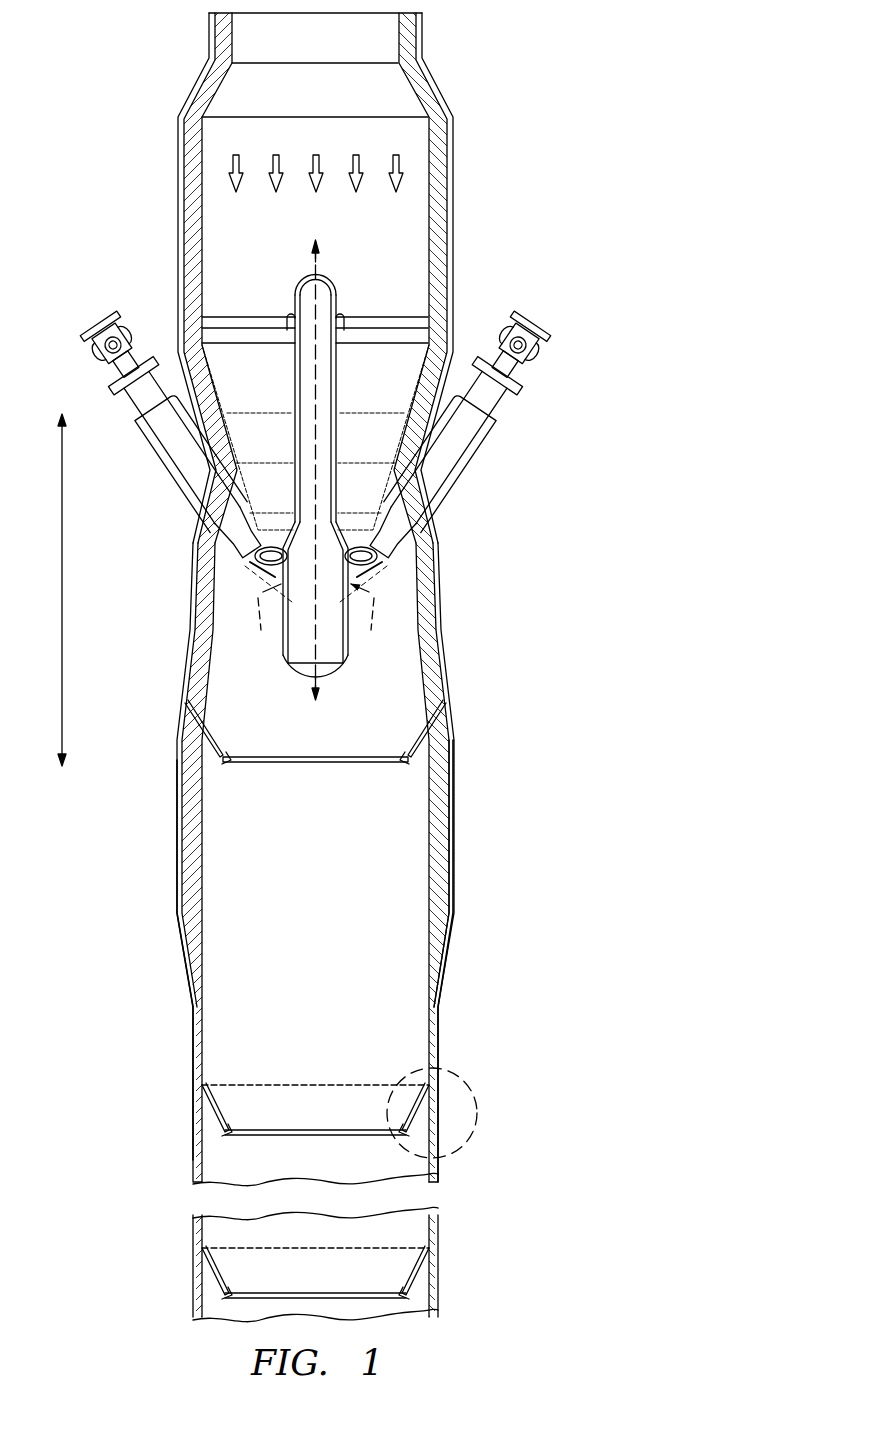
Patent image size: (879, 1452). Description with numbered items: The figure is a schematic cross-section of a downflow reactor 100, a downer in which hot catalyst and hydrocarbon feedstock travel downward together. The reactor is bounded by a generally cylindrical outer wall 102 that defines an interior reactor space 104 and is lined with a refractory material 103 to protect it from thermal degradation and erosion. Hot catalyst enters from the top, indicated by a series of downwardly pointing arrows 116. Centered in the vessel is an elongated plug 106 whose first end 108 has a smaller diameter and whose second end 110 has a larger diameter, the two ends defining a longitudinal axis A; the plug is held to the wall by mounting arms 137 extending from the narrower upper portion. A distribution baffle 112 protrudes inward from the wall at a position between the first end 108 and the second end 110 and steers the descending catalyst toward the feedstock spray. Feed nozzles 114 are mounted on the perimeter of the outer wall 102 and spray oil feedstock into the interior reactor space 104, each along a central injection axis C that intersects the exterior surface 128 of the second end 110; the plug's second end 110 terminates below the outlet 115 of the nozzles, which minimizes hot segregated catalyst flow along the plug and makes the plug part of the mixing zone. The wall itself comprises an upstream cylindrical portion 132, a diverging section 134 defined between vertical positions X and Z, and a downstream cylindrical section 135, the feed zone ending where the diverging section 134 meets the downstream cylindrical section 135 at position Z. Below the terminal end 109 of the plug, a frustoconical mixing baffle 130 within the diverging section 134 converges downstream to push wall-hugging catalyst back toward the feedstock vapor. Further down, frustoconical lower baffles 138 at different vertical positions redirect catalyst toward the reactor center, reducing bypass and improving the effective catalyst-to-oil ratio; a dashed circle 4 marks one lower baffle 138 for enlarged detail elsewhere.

The downflow reactor 100 is at (494, 100).
The outer wall 102 is at (452, 740).
The refractory material 103 is at (192, 856).
The interior reactor space 104 is at (404, 645).
The elongated plug 106 is at (341, 289).
The first end 108 is at (293, 292).
The terminal end 109 is at (328, 680).
The second end 110 is at (285, 656).
The distribution baffle 112 is at (396, 470).
The feed nozzles 114 is at (503, 416).
The outlet 115 is at (405, 562).
The downwardly pointing arrows 116 is at (402, 182).
The exterior surface 128 is at (346, 656).
The mixing baffle 130 is at (219, 762).
The upstream cylindrical portion 132 is at (178, 216).
The diverging section 134 is at (195, 630).
The downstream cylindrical section 135 is at (452, 826).
The mounting arms 137 is at (408, 318).
The lower baffles 138 is at (220, 1130).
The detail circle for FIG. 4 is at (472, 1093).
The longitudinal axis A is at (325, 273).
The central injection axis C is at (316, 612).
The vertical position X is at (200, 413).
The vertical position Z is at (180, 767).